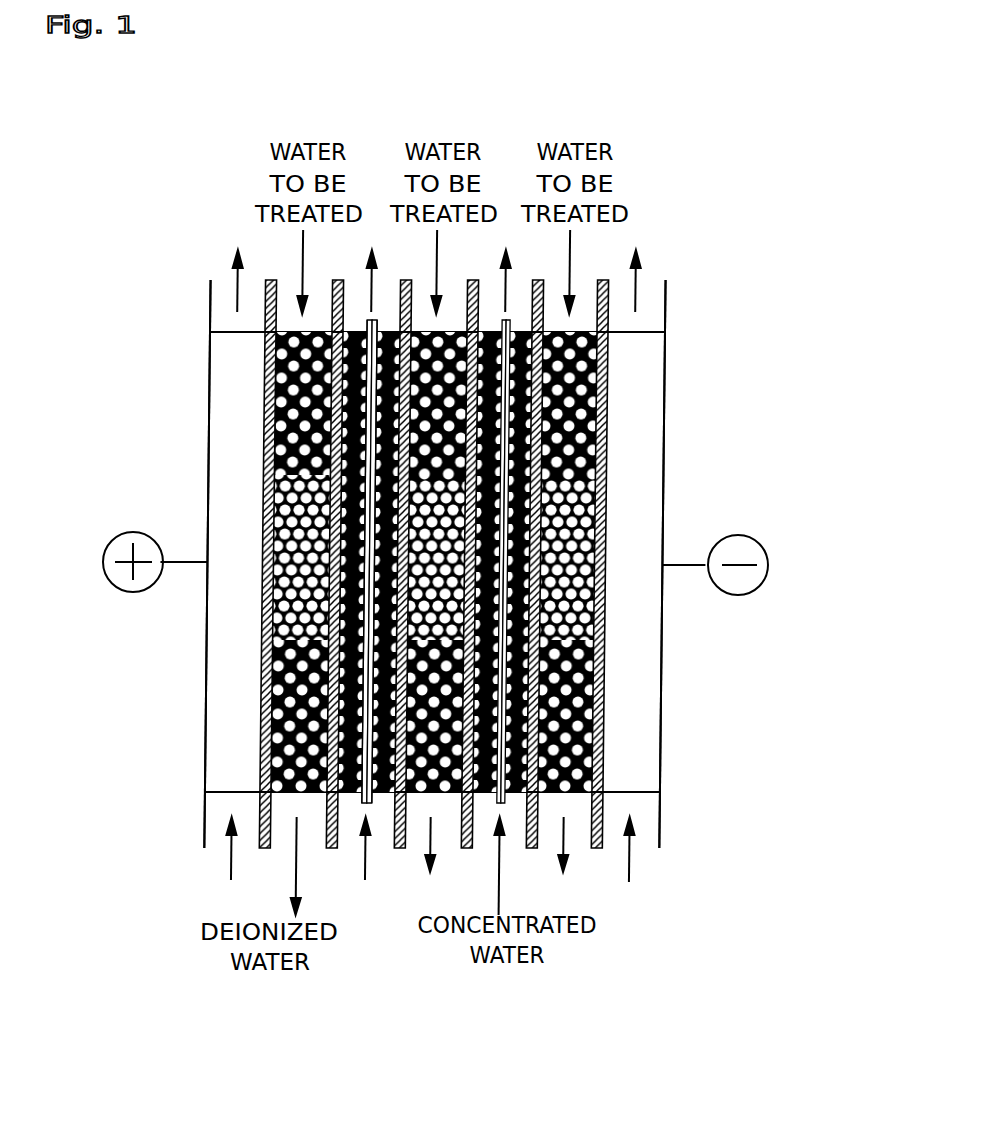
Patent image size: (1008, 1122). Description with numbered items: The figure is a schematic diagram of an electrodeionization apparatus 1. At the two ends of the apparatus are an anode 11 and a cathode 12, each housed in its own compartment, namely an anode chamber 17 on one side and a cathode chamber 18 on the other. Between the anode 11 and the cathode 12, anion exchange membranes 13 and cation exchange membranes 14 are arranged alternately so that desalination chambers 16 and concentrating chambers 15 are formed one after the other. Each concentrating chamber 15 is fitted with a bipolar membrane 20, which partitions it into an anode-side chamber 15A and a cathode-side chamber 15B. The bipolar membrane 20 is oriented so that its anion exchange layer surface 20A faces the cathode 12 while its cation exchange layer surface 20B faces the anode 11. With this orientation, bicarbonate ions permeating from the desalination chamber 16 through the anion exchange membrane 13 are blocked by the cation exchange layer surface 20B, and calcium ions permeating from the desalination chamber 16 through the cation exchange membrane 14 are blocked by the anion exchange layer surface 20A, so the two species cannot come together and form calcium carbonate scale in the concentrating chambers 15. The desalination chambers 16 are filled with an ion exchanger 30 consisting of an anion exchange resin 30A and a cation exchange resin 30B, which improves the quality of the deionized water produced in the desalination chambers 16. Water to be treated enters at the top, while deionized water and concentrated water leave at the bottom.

The electrodeionization apparatus 1 is at (712, 348).
The anode 11 is at (207, 674).
The cathode 12 is at (663, 473).
The anion exchange membrane 13 is at (260, 777).
The cation exchange membrane 14 is at (328, 849).
The concentrating chamber 15 is at (380, 437).
The anode-side chamber 15A is at (369, 321).
The cathode-side chamber 15B is at (376, 321).
The desalination chamber 16 is at (288, 320).
The anode chamber 17 is at (227, 463).
The cathode chamber 18 is at (645, 687).
The bipolar membrane 20 is at (371, 690).
The anion exchange layer surface 20A is at (363, 803).
The cation exchange layer surface 20B is at (373, 803).
The ion exchanger 30 is at (627, 494).
The anion exchange resin 30A is at (578, 333).
The cation exchange resin 30B is at (588, 333).